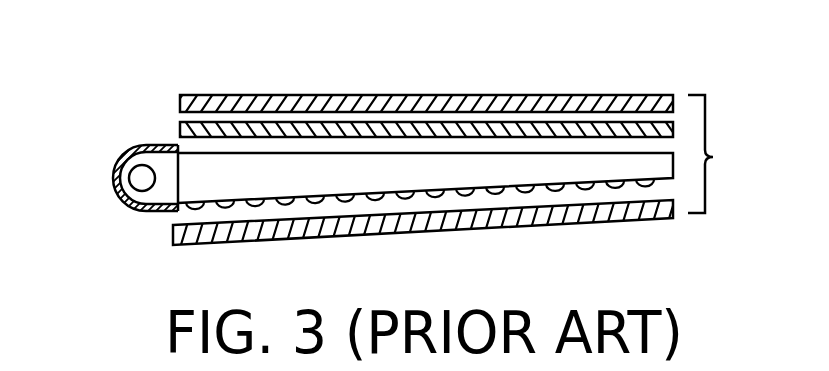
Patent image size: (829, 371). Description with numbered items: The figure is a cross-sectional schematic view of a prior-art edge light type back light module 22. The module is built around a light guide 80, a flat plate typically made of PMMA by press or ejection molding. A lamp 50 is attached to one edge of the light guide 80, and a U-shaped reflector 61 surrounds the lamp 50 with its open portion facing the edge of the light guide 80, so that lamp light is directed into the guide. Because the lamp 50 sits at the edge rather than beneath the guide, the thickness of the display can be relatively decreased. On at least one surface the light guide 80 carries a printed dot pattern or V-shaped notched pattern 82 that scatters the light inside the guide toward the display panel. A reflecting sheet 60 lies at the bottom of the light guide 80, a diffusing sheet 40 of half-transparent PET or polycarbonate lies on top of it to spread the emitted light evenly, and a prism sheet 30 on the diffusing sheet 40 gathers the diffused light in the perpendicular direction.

The back light module 22 is at (719, 154).
The prism sheet 30 is at (325, 95).
The diffusing sheet 40 is at (473, 122).
The lamp 50 is at (142, 179).
The U-shaped reflector 61 is at (148, 212).
The reflecting sheet 60 is at (323, 237).
The light guide 80 is at (513, 178).
The V-shaped notched pattern 82 is at (591, 181).